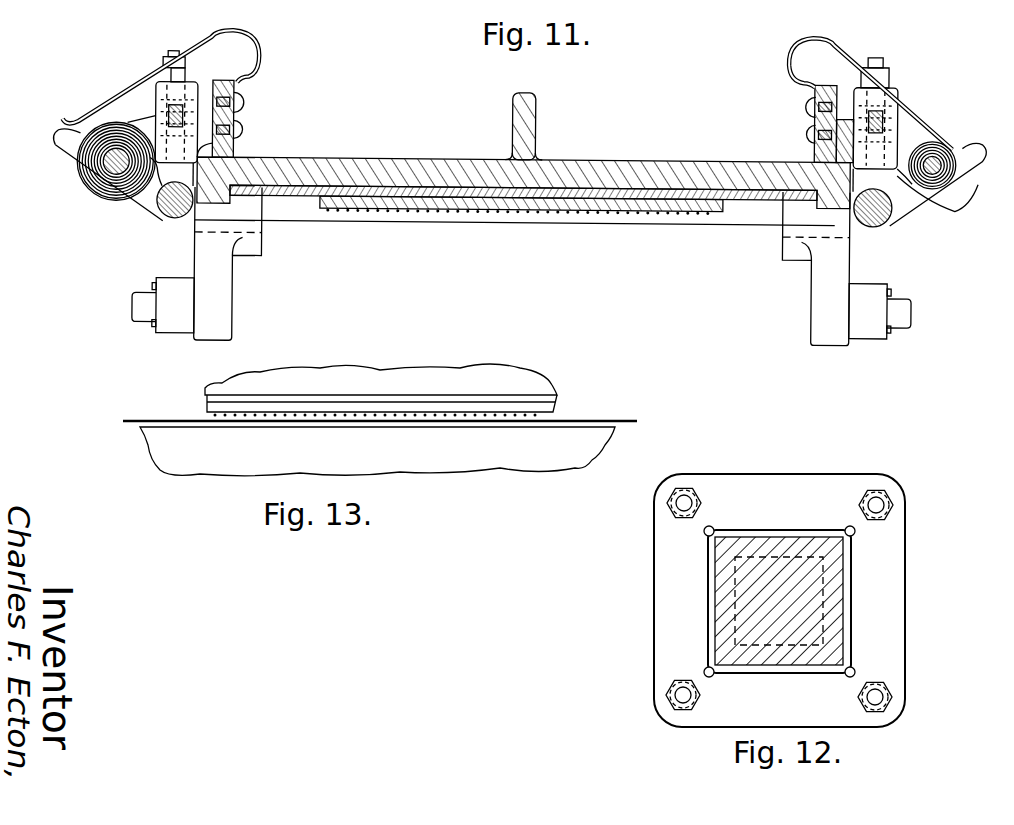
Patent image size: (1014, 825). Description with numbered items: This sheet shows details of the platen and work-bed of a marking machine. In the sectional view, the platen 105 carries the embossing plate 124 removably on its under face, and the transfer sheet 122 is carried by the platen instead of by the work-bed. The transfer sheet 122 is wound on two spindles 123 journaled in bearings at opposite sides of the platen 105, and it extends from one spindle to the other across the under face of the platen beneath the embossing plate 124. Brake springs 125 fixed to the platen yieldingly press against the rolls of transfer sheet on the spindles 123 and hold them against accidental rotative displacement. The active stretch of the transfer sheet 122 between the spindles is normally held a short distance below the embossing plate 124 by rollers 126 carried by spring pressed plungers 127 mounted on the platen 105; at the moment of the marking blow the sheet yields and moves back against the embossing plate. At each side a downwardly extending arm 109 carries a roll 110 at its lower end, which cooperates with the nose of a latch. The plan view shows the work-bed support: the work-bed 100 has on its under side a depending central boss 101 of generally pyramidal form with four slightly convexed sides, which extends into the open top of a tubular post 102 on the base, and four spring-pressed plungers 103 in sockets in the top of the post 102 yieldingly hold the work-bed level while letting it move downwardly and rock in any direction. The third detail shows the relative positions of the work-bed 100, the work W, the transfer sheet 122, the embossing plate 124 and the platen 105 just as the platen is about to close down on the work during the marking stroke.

In FIG. 13, the work-bed 100 is at (377, 451).
In FIG. 12, the depending central boss 101 is at (822, 607).
In FIG. 12, the tubular or socket-like post 102 is at (668, 597).
In FIG. 12, the spring-pressed plungers 103 is at (668, 504).
In FIG. 11, the platen 105 is at (615, 157).
In FIG. 13, the platen 105 is at (370, 374).
In FIG. 11, the downwardly extending arm 109 is at (230, 283).
In FIG. 11, the roll 110 is at (157, 280).
In FIG. 11, the transfer sheet 122 is at (685, 220).
In FIG. 13, the transfer sheet 122 is at (617, 421).
In FIG. 11, the spindles 123 is at (112, 175).
In FIG. 11, the embossing plate 124 is at (508, 207).
In FIG. 13, the embossing plate 124 is at (535, 408).
In FIG. 11, the brake springs 125 is at (261, 62).
In FIG. 11, the rollers 126 is at (172, 220).
In FIG. 11, the spring pressed plungers 127 is at (143, 200).
In FIG. 13, the work W is at (572, 430).